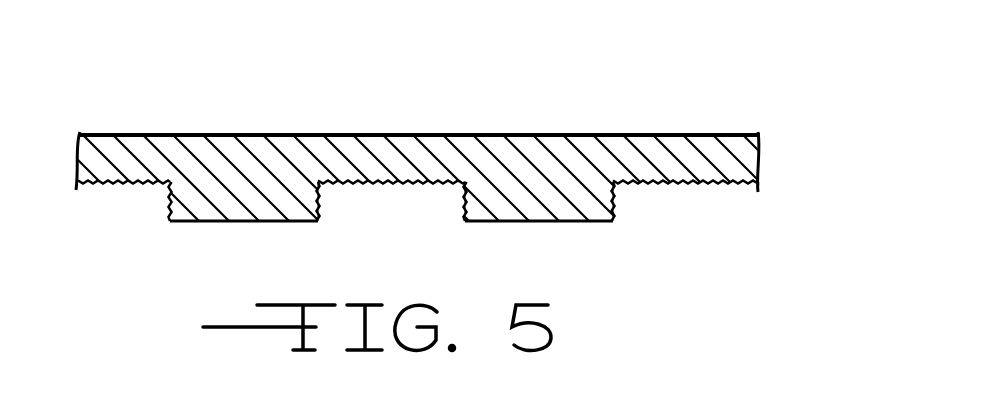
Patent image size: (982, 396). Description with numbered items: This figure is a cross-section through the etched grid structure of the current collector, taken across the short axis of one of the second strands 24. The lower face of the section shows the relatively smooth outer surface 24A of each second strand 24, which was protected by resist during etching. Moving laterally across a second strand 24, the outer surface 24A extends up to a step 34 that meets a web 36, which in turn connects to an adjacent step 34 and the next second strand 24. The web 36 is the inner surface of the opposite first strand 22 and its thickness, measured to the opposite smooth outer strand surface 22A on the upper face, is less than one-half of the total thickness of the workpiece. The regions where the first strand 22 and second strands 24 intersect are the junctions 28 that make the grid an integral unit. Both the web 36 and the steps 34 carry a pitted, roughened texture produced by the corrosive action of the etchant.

The first strand structure 22 is at (138, 135).
The outer surface of first strand 22A is at (458, 129).
The second strand structure 24 is at (528, 222).
The outer surface of second strand 24A is at (214, 228).
The junction 28 is at (233, 170).
The step 34 is at (460, 184).
The web 36 is at (378, 178).